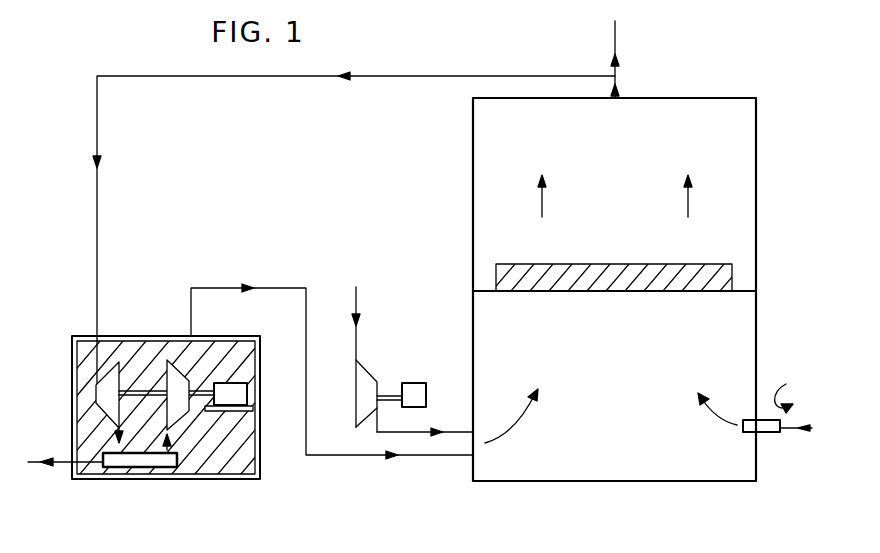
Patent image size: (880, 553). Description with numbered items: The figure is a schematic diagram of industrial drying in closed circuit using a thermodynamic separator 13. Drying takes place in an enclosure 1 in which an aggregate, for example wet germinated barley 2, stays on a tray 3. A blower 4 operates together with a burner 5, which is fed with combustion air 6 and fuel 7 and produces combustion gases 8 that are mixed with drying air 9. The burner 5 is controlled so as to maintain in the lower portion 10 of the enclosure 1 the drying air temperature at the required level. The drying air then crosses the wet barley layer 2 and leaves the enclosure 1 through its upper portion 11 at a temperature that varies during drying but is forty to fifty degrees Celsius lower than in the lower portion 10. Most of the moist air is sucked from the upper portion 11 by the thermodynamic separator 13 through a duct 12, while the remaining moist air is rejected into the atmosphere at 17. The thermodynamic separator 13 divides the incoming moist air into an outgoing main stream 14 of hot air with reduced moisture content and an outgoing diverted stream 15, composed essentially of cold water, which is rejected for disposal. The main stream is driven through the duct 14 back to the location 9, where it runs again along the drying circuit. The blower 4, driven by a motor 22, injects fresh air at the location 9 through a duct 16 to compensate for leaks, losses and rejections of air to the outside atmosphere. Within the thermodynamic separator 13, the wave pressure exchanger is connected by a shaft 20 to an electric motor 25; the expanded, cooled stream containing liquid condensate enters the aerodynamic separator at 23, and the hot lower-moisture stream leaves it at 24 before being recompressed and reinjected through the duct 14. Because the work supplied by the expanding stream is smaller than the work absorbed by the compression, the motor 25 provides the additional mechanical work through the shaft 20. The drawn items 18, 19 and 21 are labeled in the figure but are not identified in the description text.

The enclosure 1 is at (757, 337).
The wet germinated barley 2 is at (735, 266).
The tray 3 is at (750, 294).
The blower 4 is at (366, 376).
The burner 5 is at (768, 433).
The combustion air 6 is at (793, 431).
The fuel 7 is at (786, 382).
The combustion gases 8 is at (707, 425).
The drying air 9 is at (518, 426).
The lower portion 10 is at (597, 383).
The upper portion 11 is at (612, 182).
The duct 12 is at (297, 77).
The thermodynamic separator 13 is at (68, 357).
The main stream duct 14 is at (207, 288).
The diverted stream 15 is at (60, 470).
The duct 16 is at (455, 432).
The atmosphere rejection outlet 17 is at (617, 40).
The hopper 18 is at (63, 324).
The funnel 19 is at (177, 407).
The shaft 20 is at (152, 388).
The collecting tray 21 is at (145, 463).
The motor 22 is at (416, 390).
The aerodynamic separator inlet 23 is at (0, 435).
The aerodynamic separator outlet 24 is at (64, 535).
The motor 25 is at (222, 385).